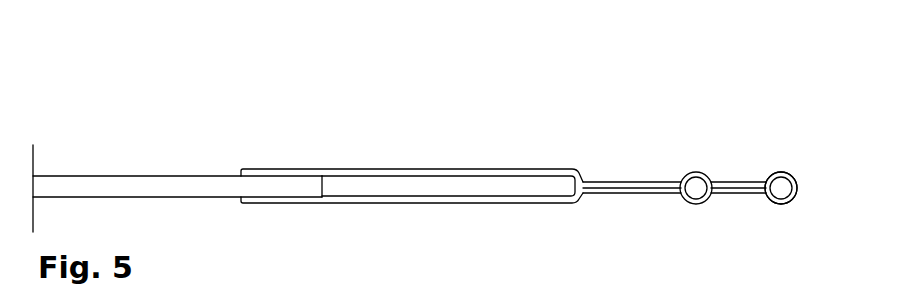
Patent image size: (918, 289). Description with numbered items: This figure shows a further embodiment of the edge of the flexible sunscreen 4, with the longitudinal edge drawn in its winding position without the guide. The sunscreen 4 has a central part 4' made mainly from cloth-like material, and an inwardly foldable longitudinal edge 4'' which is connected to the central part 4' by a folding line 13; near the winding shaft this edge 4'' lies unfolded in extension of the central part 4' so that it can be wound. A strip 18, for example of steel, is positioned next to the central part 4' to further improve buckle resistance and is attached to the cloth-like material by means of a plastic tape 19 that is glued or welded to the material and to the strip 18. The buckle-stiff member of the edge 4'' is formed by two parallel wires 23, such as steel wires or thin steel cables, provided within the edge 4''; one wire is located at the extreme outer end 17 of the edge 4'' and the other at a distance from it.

The flexible sunscreen 4 is at (177, 119).
The central part 4' is at (56, 135).
The inwardly folded longitudinal edge 4'' is at (705, 118).
The strip 18 is at (385, 169).
The plastic tape 19 is at (503, 174).
The folding line 13 is at (583, 181).
The parallel wires 23 is at (781, 188).
The outer end 17 is at (802, 186).